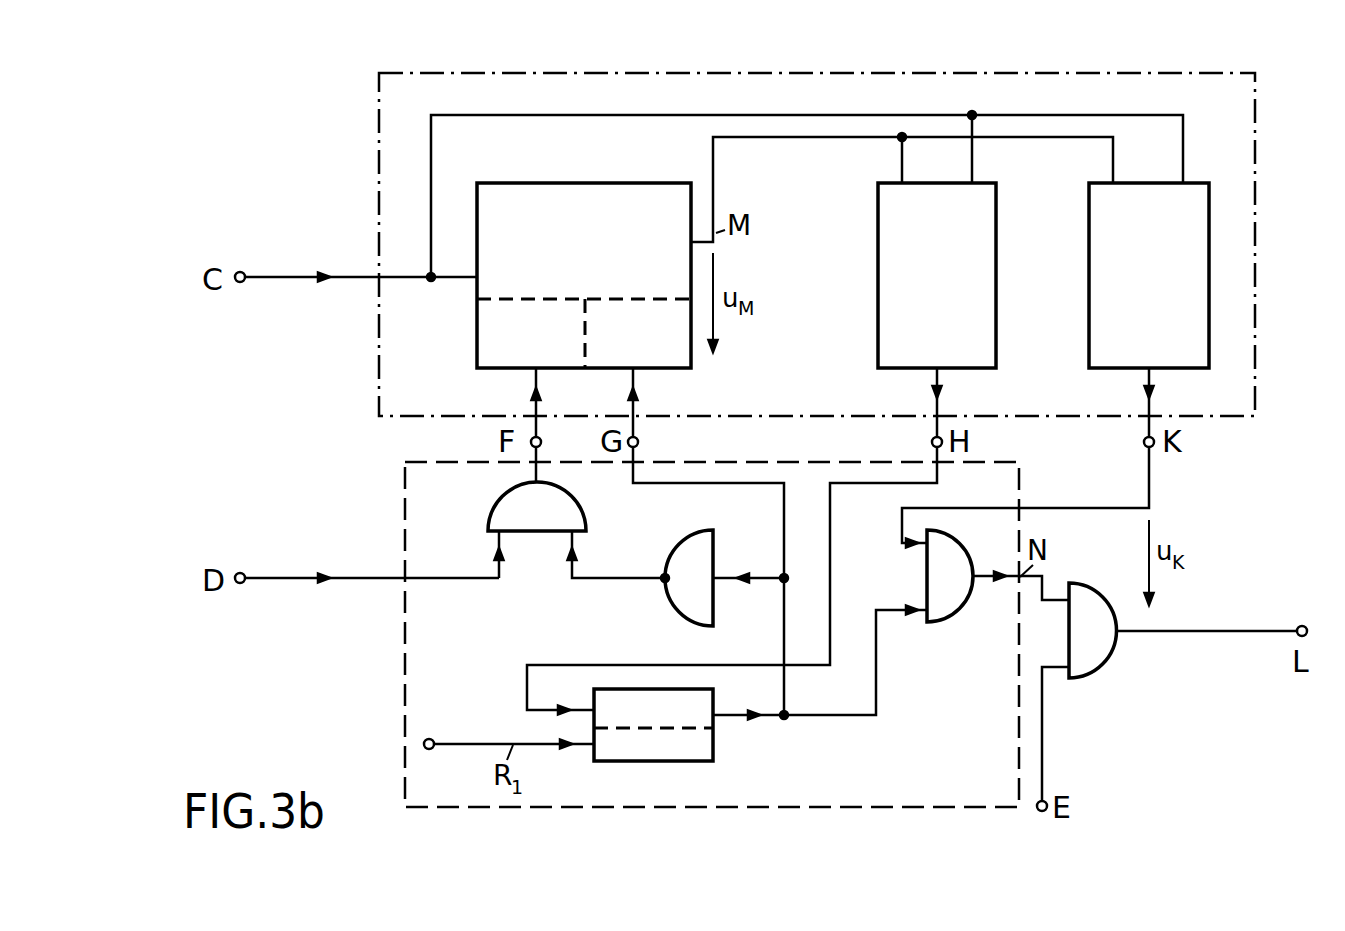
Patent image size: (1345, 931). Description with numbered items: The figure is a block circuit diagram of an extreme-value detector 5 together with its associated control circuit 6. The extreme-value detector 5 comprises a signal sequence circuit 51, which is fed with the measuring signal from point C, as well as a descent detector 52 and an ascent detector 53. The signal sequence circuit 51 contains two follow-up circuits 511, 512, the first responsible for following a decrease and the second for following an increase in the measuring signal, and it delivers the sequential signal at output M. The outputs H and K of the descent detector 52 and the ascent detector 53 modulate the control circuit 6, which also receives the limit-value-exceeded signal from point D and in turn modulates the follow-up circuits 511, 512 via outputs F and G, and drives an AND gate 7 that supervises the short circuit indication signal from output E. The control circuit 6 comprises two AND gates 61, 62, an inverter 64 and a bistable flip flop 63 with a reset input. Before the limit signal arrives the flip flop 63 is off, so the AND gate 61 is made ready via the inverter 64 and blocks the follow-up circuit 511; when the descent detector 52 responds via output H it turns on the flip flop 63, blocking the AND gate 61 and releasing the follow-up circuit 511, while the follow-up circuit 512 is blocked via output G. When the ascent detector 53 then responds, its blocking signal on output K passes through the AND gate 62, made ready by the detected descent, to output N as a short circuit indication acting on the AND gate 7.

The extreme-value detector 5 is at (379, 366).
The signal sequence circuit 51 is at (555, 182).
The follow-up circuit 511 is at (545, 344).
The follow-up circuit 512 is at (648, 344).
The descent detector 52 is at (878, 287).
The ascent detector 53 is at (1089, 287).
The control circuit 6 is at (405, 510).
The AND gate 61 is at (580, 508).
The AND gate 62 is at (944, 626).
The bistable flip flop 63 is at (713, 758).
The inverter 64 is at (671, 602).
The AND gate 7 is at (1095, 592).